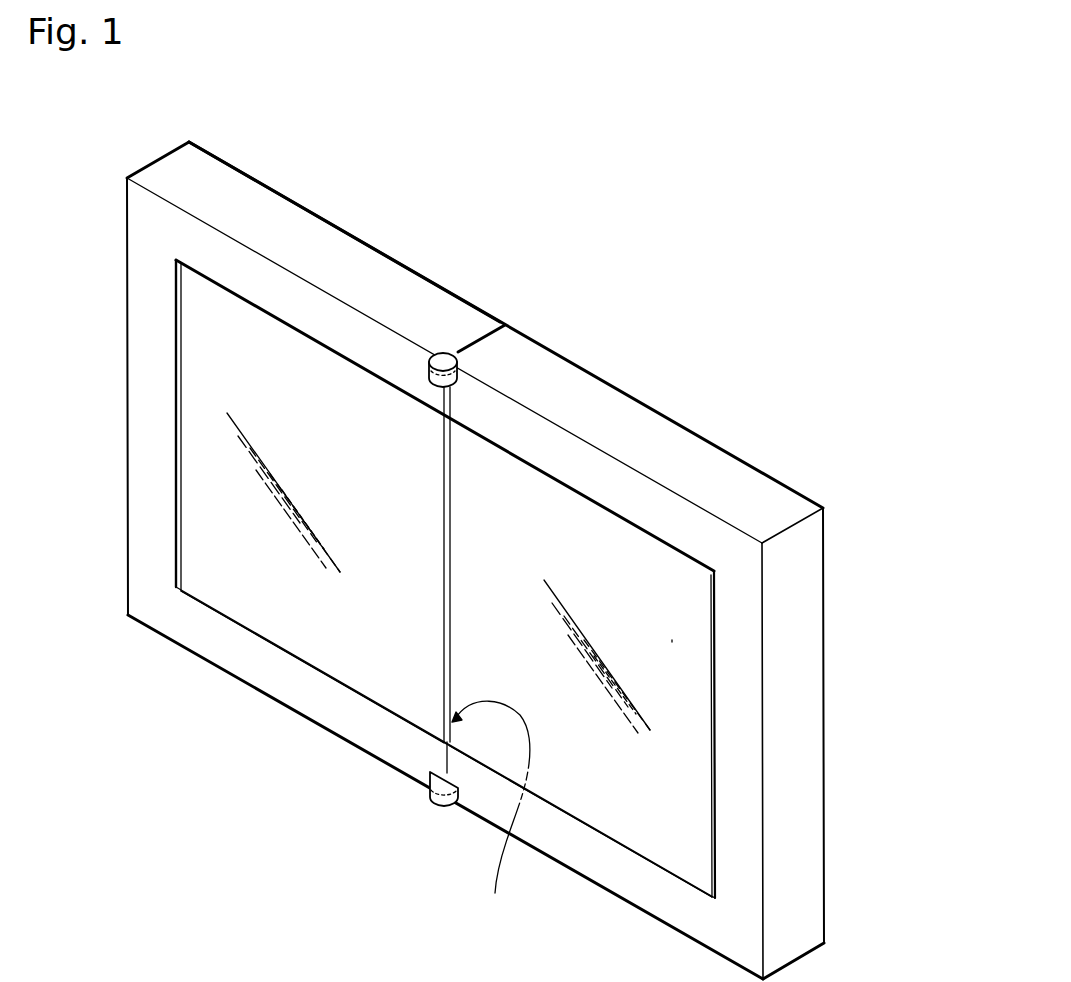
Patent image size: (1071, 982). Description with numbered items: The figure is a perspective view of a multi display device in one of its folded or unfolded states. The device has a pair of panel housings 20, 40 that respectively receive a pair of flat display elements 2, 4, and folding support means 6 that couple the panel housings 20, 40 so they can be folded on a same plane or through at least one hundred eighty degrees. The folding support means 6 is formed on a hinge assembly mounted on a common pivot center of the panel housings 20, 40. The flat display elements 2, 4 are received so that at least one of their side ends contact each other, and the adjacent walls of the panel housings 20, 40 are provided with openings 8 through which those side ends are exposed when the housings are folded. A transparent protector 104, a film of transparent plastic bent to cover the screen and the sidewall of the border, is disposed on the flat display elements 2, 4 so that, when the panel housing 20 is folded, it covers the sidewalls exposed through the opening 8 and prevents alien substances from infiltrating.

The flat display element 2 is at (305, 628).
The flat display element 4 is at (642, 832).
The folding support means 6 is at (441, 352).
The opening 8 is at (491, 817).
The panel housing 20 is at (362, 257).
The panel housing 40 is at (595, 392).
The transparent protector 104 is at (672, 640).